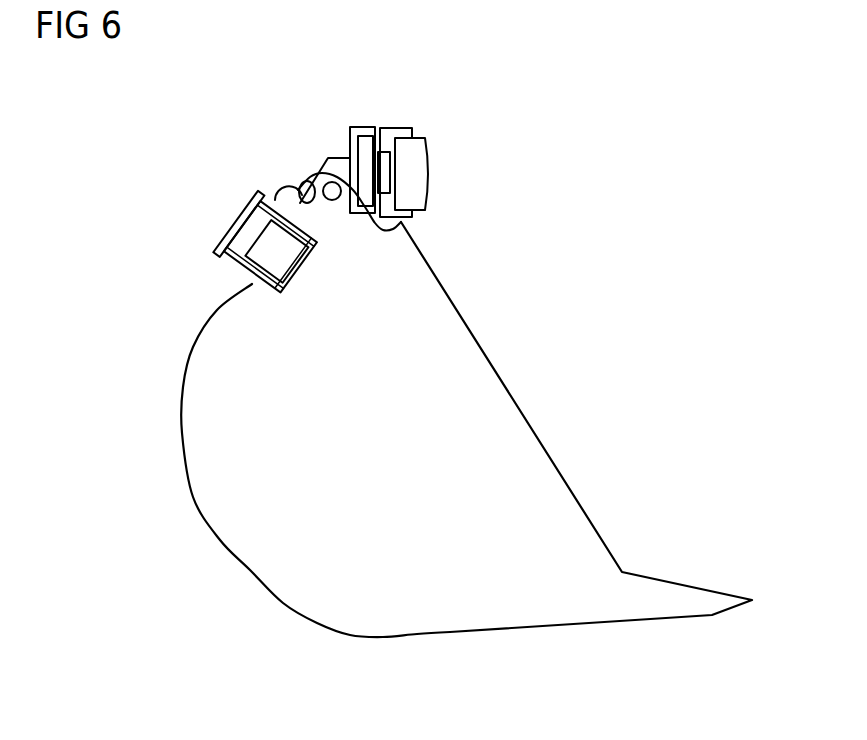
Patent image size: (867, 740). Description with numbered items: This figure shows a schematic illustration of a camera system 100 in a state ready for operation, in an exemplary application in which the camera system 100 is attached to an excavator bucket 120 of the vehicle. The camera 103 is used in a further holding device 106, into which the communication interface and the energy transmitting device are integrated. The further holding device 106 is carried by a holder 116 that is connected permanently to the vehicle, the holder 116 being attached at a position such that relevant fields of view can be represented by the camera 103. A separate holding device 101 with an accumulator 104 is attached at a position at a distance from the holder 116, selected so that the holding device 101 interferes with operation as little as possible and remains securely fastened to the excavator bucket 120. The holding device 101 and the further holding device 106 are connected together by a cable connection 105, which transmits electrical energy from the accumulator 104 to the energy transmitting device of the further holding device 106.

The camera system 100 is at (487, 86).
The holding device 101 is at (230, 267).
The camera 103 is at (410, 172).
The accumulator 104 is at (272, 253).
The cable connection 105 is at (288, 183).
The further holding device 106 is at (390, 128).
The holder 116 is at (358, 127).
The excavator bucket 120 is at (247, 525).